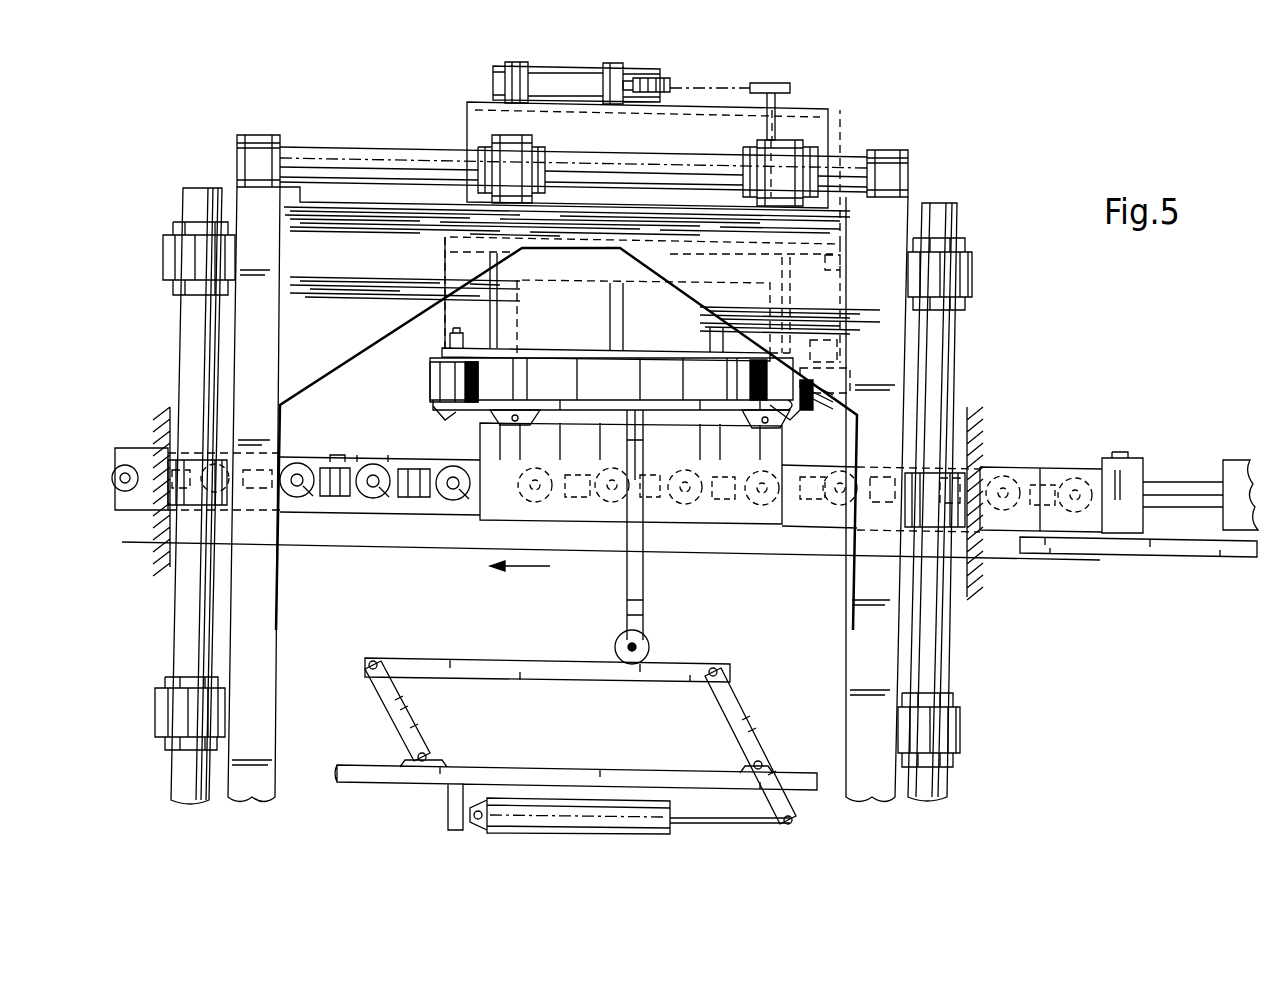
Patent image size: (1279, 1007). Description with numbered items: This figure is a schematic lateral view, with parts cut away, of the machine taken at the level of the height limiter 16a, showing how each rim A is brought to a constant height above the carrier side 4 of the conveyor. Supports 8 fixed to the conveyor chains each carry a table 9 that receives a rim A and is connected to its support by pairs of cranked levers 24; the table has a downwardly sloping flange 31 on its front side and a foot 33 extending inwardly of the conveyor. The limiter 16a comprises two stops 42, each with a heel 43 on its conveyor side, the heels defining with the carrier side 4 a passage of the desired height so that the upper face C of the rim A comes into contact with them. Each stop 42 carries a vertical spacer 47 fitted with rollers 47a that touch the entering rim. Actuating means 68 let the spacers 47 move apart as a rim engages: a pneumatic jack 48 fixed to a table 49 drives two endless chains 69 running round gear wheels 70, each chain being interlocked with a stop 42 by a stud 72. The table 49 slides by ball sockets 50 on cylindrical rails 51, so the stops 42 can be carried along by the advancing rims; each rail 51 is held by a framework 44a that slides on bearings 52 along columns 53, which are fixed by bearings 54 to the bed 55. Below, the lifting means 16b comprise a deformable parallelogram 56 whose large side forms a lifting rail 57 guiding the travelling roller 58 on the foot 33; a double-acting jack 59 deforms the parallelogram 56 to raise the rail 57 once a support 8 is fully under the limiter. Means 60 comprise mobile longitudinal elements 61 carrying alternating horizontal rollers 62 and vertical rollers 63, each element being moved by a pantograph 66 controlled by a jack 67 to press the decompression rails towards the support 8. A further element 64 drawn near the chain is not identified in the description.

The carrier side 4 is at (813, 547).
The support 8 is at (688, 459).
The table 9 is at (773, 420).
The height limiter 16a is at (937, 160).
The lifting means 16b is at (368, 793).
The cranked lever 24 is at (497, 423).
The downwardly sloping flange 31 is at (437, 410).
The foot 33 is at (630, 578).
The stop 42 is at (445, 193).
The heel 43 is at (845, 270).
The framework 44a is at (368, 258).
The vertical spacer 47 is at (450, 322).
The roller 47a is at (440, 383).
The pneumatic jack 48 is at (497, 80).
The table 49 is at (475, 120).
The ball socket 50 is at (518, 148).
The cylindrical rail 51 is at (347, 162).
The bearing 52 is at (172, 255).
The column 53 is at (190, 352).
The bearing 54 is at (215, 460).
The bed 55 is at (163, 428).
The deformable parallelogram 56 is at (752, 718).
The lifting rail 57 is at (508, 670).
The travelling roller 58 is at (650, 650).
The double-acting jack 59 is at (590, 813).
The decompression rail actuating means 60 is at (1061, 464).
The mobile longitudinal element 61 is at (1020, 467).
The horizontal roller 62 is at (410, 493).
The vertical roller 63 is at (370, 497).
The chain lug 64 is at (337, 455).
The pantograph 66 is at (1120, 517).
The jack 67 is at (1235, 468).
The actuating means 68 is at (803, 85).
The endless chain 69 is at (711, 84).
The gear wheel 70 is at (667, 83).
The stud 72 is at (772, 125).
The rim A is at (628, 391).
The upper face C is at (687, 280).